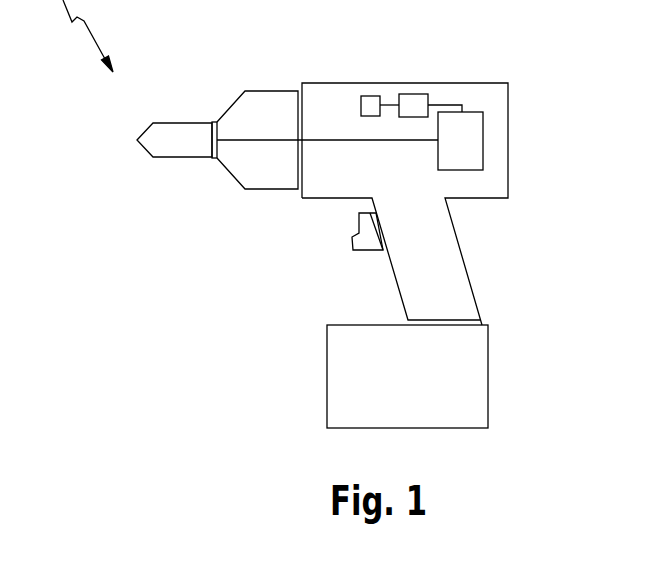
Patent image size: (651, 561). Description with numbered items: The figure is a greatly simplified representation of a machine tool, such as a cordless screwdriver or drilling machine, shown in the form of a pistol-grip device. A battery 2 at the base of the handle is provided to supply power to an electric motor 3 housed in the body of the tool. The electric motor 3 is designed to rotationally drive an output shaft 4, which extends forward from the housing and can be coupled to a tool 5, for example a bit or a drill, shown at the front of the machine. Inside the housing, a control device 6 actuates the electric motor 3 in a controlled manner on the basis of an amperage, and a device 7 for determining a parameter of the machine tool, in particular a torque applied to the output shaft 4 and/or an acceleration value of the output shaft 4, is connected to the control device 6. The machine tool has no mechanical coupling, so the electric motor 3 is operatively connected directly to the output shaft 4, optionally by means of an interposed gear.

The battery 2 is at (475, 391).
The electric motor 3 is at (473, 149).
The output shaft 4 is at (314, 140).
The tool 5 is at (173, 130).
The control device 6 is at (414, 103).
The device for determining a parameter 7 is at (368, 107).